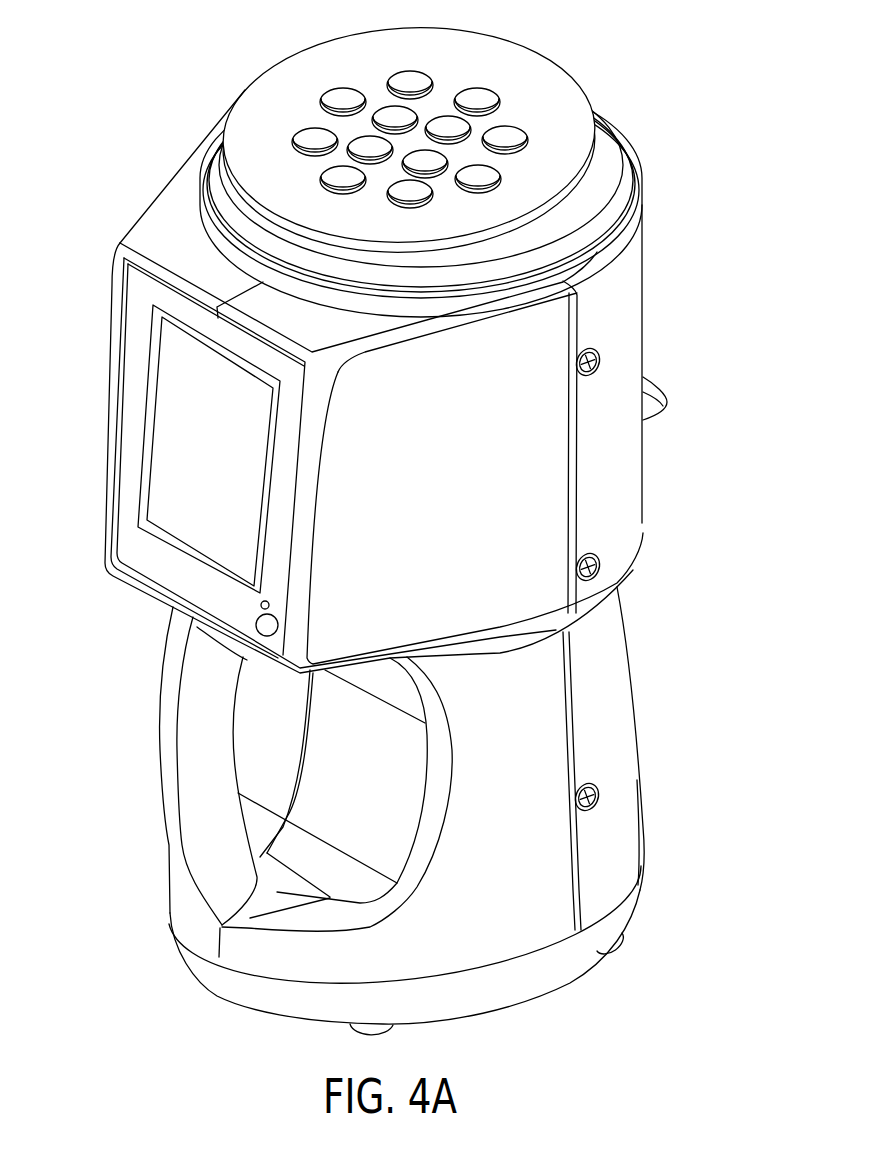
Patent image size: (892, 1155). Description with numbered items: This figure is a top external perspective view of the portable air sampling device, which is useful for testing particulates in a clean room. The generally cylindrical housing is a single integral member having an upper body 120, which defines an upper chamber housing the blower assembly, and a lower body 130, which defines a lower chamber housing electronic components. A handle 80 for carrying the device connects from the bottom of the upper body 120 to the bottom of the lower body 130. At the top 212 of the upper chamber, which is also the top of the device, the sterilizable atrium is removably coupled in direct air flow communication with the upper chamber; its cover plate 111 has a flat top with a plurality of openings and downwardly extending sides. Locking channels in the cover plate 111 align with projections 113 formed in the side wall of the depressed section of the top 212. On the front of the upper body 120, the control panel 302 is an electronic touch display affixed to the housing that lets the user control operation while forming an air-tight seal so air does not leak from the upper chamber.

The handle 80 is at (207, 768).
The cover plate 111 is at (567, 115).
The projections 113 is at (437, 120).
The upper body 120 is at (728, 547).
The lower body 130 is at (727, 548).
The top 212 is at (163, 220).
The control panel 302 is at (163, 440).